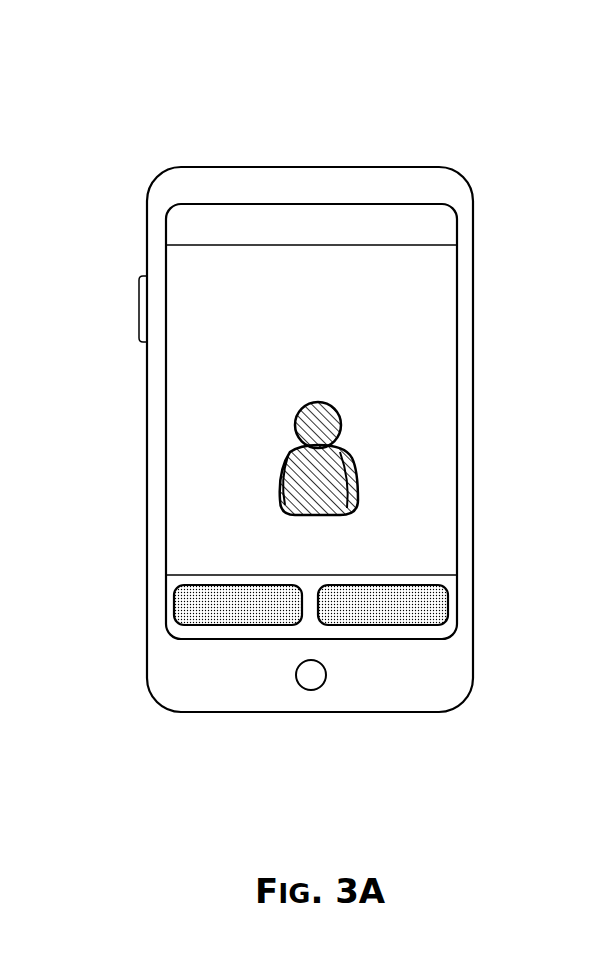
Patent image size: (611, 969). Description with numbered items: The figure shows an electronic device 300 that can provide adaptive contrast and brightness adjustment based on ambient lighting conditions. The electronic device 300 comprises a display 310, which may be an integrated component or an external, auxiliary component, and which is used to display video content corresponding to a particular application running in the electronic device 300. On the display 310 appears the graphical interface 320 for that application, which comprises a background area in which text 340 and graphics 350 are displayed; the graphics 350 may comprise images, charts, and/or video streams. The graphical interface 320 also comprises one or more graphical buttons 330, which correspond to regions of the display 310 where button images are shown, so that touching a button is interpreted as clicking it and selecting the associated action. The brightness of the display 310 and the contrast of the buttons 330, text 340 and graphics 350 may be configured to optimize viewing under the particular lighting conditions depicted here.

The electronic device 300 is at (403, 157).
The display 310 is at (169, 206).
The graphical interface 320 is at (434, 228).
The graphical buttons 330 is at (196, 606).
The text 340 is at (366, 313).
The graphics 350 is at (363, 458).